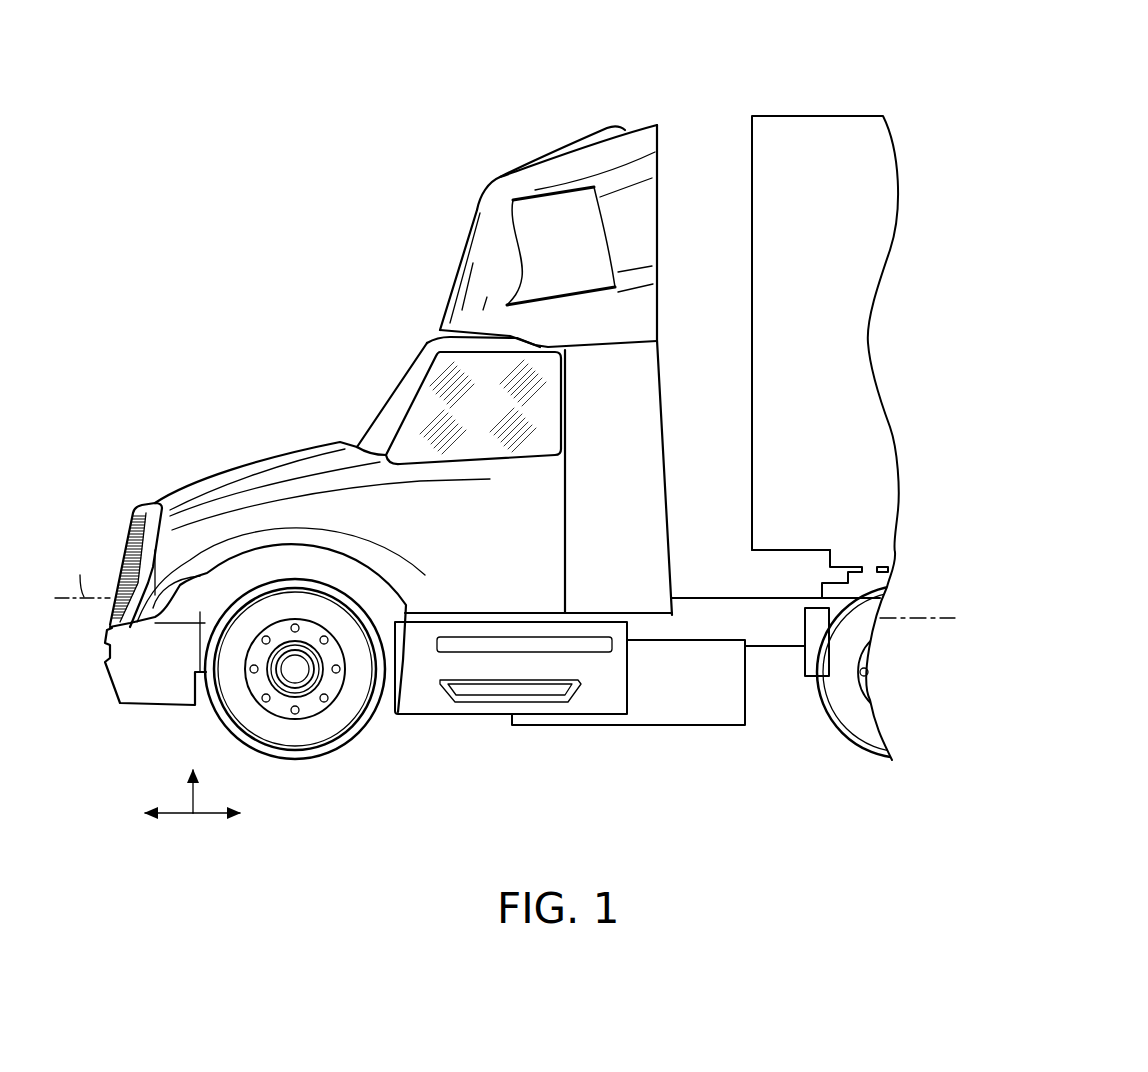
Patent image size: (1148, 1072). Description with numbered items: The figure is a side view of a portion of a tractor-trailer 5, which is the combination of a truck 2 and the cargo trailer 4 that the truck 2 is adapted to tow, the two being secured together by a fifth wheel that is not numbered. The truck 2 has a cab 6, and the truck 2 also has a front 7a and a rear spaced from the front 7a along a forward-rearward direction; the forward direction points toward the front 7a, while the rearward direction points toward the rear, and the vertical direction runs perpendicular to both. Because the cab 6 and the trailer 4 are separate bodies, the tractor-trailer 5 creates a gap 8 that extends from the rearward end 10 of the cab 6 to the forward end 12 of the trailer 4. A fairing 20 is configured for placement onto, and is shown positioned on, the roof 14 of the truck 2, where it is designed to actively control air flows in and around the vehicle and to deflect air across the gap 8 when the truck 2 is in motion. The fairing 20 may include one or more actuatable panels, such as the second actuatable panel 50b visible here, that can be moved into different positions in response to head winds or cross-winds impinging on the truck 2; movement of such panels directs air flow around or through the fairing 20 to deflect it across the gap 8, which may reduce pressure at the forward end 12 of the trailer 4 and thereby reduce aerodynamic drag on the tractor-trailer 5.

The tractor-trailer 5 is at (537, 57).
The truck 2 is at (275, 418).
The cargo trailer 4 is at (846, 233).
The cab 6 is at (519, 559).
The front 7a is at (105, 695).
The gap 8 is at (702, 155).
The rearward end 10 is at (657, 250).
The forward end 12 is at (752, 345).
The roof 14 is at (468, 338).
The fairing 20 is at (470, 178).
The second actuatable panel 50b is at (581, 258).